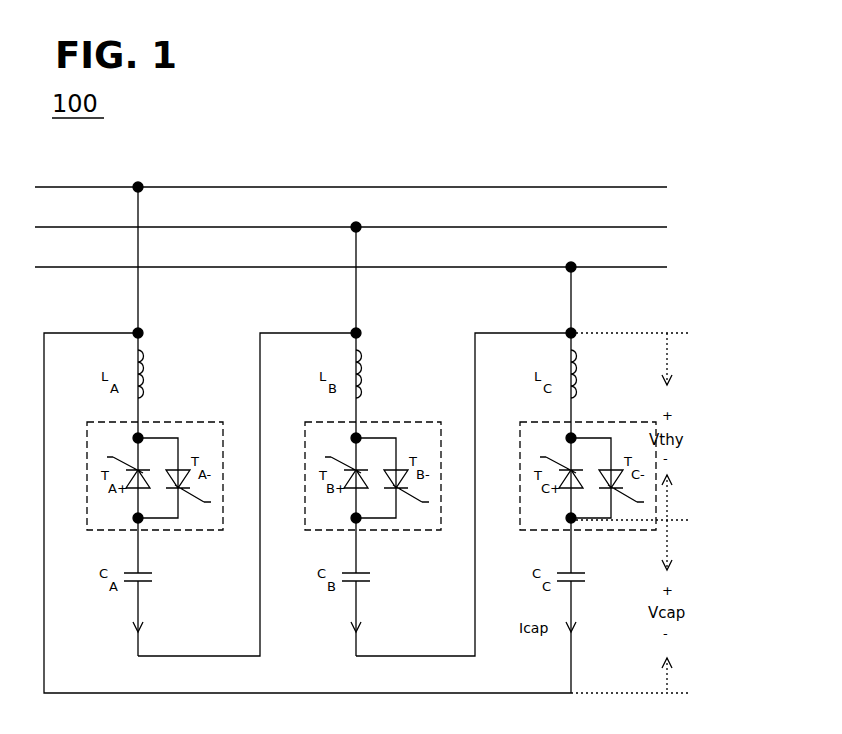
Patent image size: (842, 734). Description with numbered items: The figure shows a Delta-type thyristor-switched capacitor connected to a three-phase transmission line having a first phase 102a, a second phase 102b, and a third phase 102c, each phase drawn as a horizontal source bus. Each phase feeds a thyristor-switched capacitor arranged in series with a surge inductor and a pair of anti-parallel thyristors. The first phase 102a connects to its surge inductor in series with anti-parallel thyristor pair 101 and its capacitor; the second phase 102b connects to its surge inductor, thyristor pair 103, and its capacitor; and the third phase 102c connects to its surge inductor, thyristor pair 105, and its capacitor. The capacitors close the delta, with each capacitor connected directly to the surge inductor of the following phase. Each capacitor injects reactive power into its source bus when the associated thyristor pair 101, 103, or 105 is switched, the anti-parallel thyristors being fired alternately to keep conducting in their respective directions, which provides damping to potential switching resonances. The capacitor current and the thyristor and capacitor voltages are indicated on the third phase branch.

The anti-parallel thyristor pair 101 is at (205, 420).
The first phase 102a is at (375, 187).
The second phase 102b is at (375, 227).
The third phase 102c is at (375, 267).
The thyristor pair 103 is at (414, 421).
The thyristor pair 105 is at (628, 425).